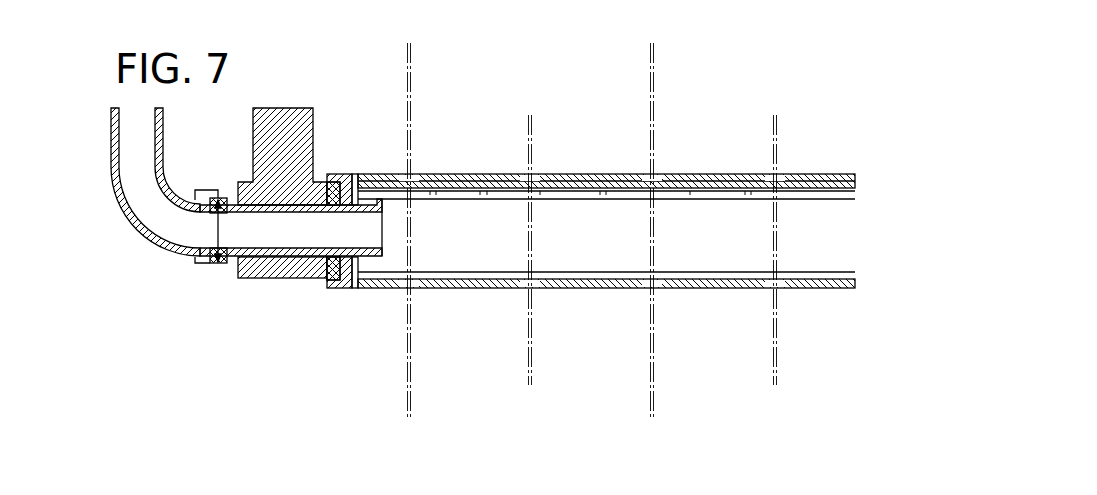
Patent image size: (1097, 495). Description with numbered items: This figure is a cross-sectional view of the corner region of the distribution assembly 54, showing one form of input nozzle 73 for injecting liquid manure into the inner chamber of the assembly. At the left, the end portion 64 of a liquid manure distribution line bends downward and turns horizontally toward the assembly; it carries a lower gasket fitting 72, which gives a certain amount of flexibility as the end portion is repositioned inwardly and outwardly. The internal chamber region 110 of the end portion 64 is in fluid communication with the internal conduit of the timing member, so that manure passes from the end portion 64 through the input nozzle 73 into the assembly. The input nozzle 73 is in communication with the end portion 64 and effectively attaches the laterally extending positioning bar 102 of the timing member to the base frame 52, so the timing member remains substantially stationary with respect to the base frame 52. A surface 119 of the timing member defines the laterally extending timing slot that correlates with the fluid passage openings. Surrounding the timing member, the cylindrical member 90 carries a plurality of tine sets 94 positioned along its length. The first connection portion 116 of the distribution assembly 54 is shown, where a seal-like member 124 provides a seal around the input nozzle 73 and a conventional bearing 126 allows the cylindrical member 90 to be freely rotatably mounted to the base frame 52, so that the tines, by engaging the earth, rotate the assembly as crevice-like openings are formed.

The base frame 52 is at (298, 130).
The distribution assembly 54 is at (805, 119).
The end portion 64 is at (110, 150).
The lower gasket fitting 72 is at (205, 263).
The input nozzle 73 is at (367, 243).
The cylindrical member 90 is at (424, 174).
The tine sets 94 is at (410, 53).
The laterally extending positioning bar 102 is at (553, 192).
The internal chamber region 110 is at (207, 238).
The first connection portion 116 is at (370, 287).
The surface 119 is at (562, 273).
The seal-like member 124 is at (345, 174).
The bearing 126 is at (325, 282).